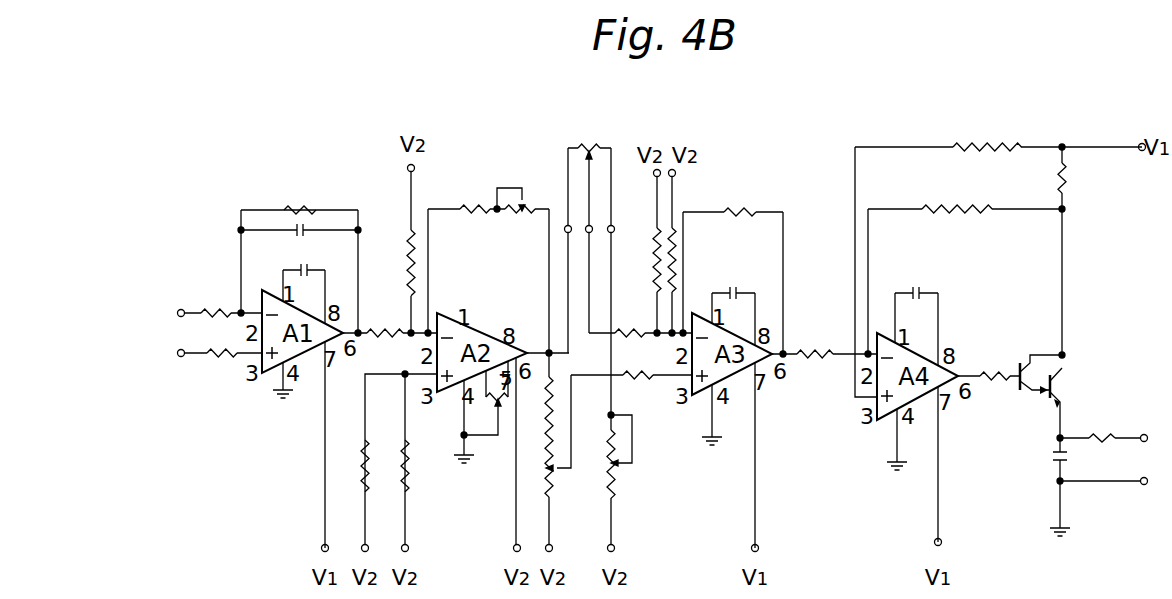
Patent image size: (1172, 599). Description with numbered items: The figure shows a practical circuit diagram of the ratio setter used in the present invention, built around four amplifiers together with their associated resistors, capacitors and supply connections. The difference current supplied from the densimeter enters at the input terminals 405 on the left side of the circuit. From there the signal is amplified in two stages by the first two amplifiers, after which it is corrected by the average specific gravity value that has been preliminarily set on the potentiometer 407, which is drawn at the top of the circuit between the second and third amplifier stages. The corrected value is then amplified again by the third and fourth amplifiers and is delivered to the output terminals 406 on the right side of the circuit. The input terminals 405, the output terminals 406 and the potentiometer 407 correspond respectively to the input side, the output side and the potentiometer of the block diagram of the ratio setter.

The input terminals 405 is at (208, 311).
The output terminals 406 is at (1111, 468).
The potentiometer 407 is at (590, 232).